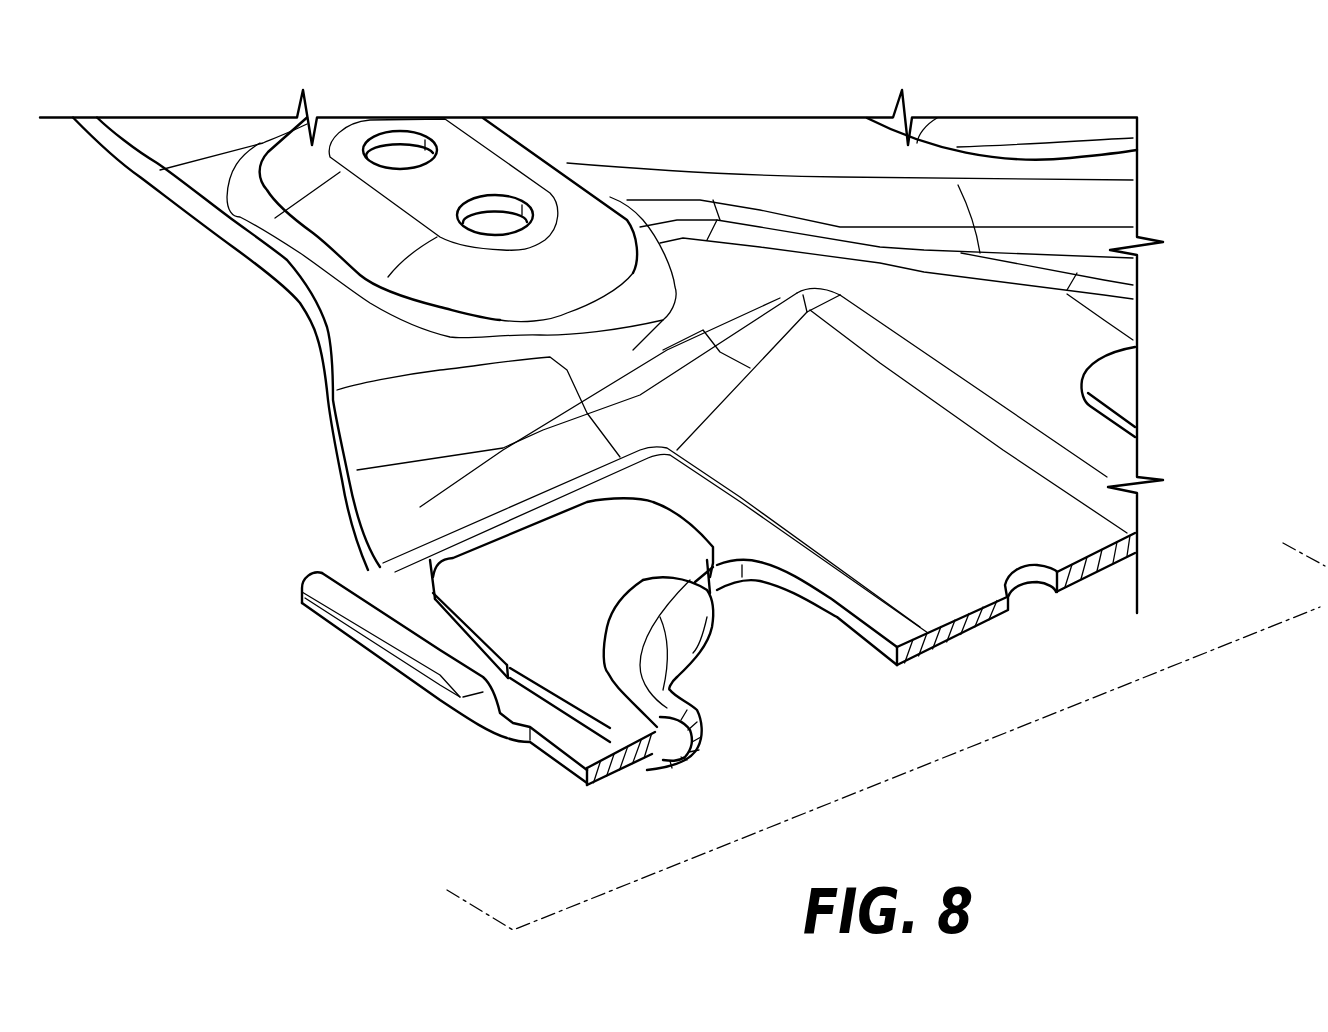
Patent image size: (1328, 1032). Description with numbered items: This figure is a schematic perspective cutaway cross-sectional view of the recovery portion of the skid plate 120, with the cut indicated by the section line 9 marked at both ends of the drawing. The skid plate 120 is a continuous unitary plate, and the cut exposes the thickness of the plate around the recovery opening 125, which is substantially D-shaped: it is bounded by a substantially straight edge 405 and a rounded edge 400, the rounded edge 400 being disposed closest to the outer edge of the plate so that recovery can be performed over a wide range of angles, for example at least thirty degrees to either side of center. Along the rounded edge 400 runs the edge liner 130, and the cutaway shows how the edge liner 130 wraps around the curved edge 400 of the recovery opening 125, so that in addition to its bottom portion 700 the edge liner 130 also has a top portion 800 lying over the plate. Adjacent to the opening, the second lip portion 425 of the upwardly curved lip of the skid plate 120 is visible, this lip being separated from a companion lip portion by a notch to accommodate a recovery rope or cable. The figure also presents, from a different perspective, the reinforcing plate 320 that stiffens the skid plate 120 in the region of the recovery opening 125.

The skid plate 120 is at (590, 81).
The recovery opening 125 is at (782, 668).
The edge liner 130 is at (648, 600).
The reinforcing plate 320 is at (648, 537).
The rounded edge 400 is at (676, 678).
The substantially straight edge 405 is at (837, 610).
The second lip portion 425 is at (362, 607).
The bottom portion 700 is at (657, 767).
The top portion 800 is at (585, 769).
The section line 9- 9 is at (431, 878).